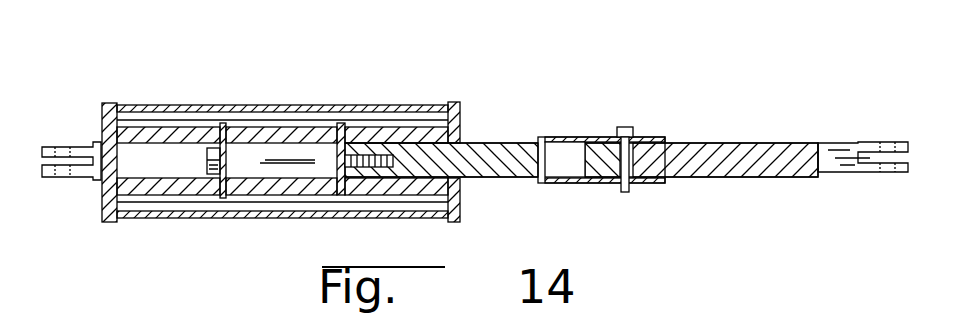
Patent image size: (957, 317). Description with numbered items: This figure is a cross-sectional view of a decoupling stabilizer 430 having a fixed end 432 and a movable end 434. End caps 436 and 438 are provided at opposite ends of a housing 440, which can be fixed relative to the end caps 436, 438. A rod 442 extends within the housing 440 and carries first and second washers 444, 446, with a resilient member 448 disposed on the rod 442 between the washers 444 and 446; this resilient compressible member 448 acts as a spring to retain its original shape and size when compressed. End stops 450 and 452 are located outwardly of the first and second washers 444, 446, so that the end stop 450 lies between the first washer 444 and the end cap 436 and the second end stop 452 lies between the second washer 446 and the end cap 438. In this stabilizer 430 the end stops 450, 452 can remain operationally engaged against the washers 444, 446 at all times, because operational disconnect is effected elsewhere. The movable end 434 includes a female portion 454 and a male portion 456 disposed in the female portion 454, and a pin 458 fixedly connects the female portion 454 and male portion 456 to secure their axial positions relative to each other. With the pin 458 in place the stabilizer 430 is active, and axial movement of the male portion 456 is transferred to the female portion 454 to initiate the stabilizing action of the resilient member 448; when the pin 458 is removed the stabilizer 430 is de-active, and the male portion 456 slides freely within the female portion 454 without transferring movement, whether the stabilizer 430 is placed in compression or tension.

The decoupling stabilizer 430 is at (171, 232).
The fixed end 432 is at (66, 147).
The movable end 434 is at (838, 148).
The end cap 436 is at (108, 197).
The end cap 438 is at (463, 201).
The housing 440 is at (225, 218).
The rod 442 is at (293, 166).
The first washer 444 is at (224, 123).
The second washer 446 is at (340, 123).
The resilient member 448 is at (278, 135).
The end stop 450 is at (150, 128).
The second end stop 452 is at (408, 133).
The female portion 454 is at (548, 137).
The male portion 456 is at (690, 153).
The pin 458 is at (630, 192).